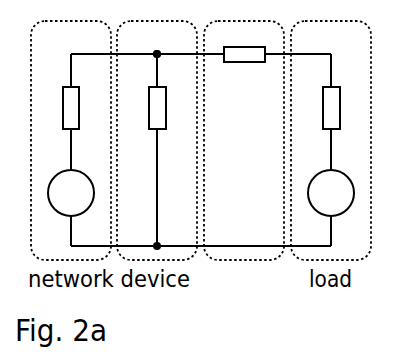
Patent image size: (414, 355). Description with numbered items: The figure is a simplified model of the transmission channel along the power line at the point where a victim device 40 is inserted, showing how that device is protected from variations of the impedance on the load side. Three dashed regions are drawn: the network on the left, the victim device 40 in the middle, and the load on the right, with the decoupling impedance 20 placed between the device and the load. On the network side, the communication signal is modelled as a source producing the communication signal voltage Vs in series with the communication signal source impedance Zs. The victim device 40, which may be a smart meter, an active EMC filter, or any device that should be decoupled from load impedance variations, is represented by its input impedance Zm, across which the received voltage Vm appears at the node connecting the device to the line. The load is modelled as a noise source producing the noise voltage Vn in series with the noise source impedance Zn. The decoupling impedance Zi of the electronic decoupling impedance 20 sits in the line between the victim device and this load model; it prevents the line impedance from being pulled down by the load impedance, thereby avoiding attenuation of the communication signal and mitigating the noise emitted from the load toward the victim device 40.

The victim device 40 is at (157, 140).
The electronic decoupling impedance 20 is at (244, 138).
The communication signal source impedance Zs is at (58, 108).
The victim device input impedance Zm is at (143, 108).
The decoupling impedance Zi is at (244, 39).
The noise source impedance from load Zn is at (318, 108).
The communication signal voltage Vs is at (73, 177).
The received voltage at the victim device Vm is at (156, 39).
The noise voltage from load Vn is at (333, 177).